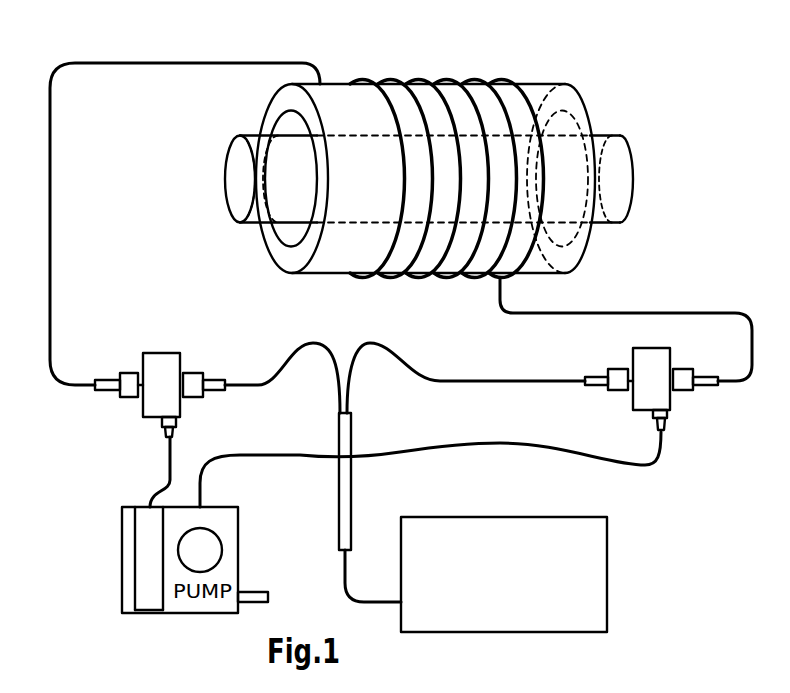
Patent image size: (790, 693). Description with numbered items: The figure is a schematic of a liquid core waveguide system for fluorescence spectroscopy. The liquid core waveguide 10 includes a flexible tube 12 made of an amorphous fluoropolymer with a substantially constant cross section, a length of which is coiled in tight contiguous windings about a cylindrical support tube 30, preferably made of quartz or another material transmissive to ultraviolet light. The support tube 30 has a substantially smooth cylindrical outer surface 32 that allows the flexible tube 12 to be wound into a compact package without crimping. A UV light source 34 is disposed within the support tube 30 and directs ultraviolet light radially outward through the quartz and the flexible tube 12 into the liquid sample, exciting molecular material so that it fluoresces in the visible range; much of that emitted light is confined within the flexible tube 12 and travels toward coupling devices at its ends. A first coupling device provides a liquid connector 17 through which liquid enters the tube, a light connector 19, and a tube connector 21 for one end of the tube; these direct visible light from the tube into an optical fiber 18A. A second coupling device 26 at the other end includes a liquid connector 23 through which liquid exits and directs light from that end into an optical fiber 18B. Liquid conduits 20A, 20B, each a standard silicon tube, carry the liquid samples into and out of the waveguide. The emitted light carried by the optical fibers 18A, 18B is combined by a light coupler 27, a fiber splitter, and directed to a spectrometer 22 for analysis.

The liquid core waveguide 10 is at (490, 60).
The flexible tube 12 is at (421, 80).
The liquid connector 17 is at (178, 433).
The optical fiber 18A is at (262, 381).
The optical fiber 18B is at (441, 380).
The light connector 19 is at (194, 376).
The liquid conduit 20A is at (180, 458).
The liquid conduit 20B is at (658, 467).
The tube connector 21 is at (124, 372).
The spectrometer 22 is at (608, 557).
The liquid connector 23 is at (657, 424).
The second coupling device 26 is at (684, 390).
The light coupler 27 is at (351, 527).
The cylindrical support tube 30 is at (570, 259).
The cylindrical outer surface 32 is at (337, 82).
The UV light source 34 is at (647, 152).